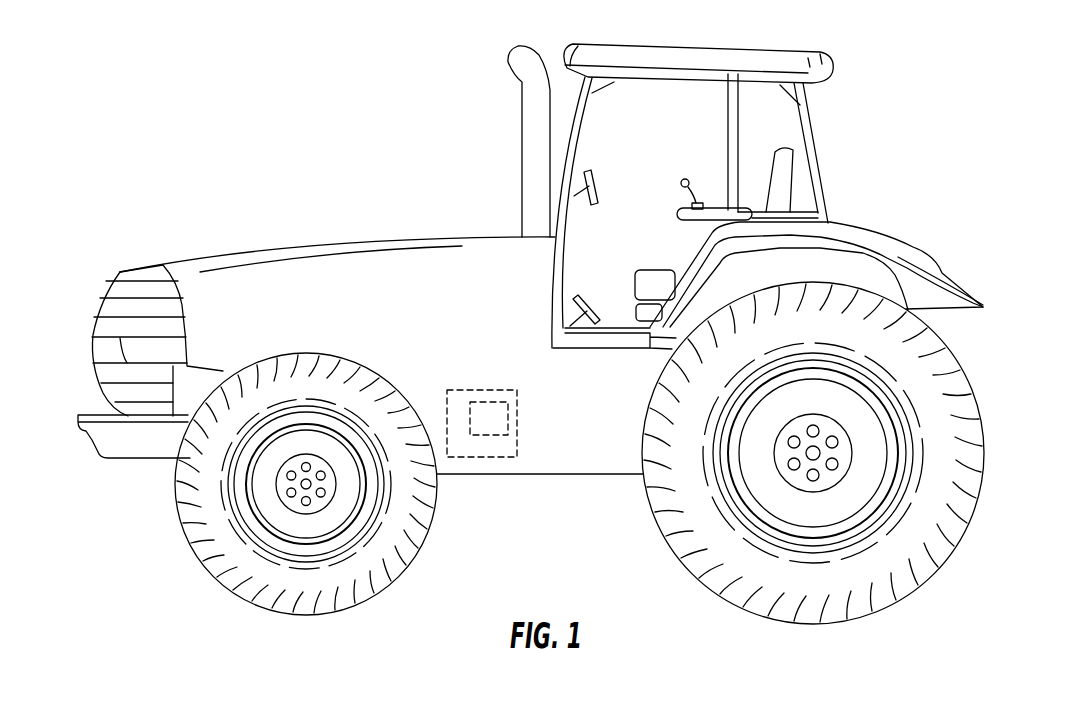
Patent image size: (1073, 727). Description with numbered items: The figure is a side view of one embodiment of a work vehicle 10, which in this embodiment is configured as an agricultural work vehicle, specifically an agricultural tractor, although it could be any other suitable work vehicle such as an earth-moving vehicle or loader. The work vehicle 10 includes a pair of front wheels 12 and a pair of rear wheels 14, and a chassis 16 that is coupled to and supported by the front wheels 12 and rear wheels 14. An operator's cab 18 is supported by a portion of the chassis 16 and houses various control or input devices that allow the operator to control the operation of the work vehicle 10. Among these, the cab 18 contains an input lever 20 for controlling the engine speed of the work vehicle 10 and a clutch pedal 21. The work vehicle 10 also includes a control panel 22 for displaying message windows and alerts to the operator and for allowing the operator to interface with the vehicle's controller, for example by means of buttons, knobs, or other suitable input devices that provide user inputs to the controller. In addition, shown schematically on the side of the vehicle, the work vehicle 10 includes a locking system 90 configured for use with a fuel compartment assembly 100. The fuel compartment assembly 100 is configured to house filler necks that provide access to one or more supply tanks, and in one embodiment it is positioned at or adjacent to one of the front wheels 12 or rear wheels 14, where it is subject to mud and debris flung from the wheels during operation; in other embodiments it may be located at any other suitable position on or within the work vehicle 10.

The work vehicle 10 is at (220, 148).
The front wheels 12 is at (176, 510).
The rear wheels 14 is at (985, 478).
The chassis 16 is at (497, 474).
The operator's cab 18 is at (828, 153).
The input lever 20 is at (681, 181).
The clutch pedal 21 is at (596, 313).
The control panel 22 is at (596, 185).
The locking system 90 is at (517, 448).
The fuel compartment assembly 100 is at (508, 417).